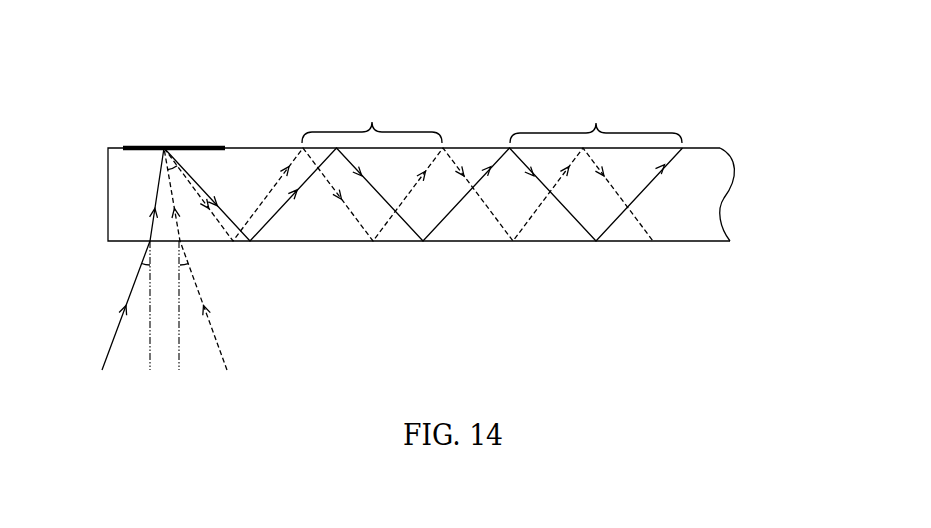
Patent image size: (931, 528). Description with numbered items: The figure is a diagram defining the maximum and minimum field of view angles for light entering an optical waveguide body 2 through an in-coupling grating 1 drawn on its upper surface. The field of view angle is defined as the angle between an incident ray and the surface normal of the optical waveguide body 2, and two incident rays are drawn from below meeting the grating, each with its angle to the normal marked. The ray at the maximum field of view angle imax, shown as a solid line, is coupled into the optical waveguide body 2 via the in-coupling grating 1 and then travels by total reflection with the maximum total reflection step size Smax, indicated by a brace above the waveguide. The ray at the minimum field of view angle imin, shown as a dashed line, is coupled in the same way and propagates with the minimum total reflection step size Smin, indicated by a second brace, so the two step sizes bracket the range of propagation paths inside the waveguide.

The in-coupling grating 1 is at (166, 130).
The optical waveguide body 2 is at (740, 152).
The maximum field of view angle imax is at (121, 259).
The minimum field of view angle imin is at (199, 259).
The minimum total reflection step size Smin is at (372, 92).
The maximum total reflection step size Smax is at (596, 87).